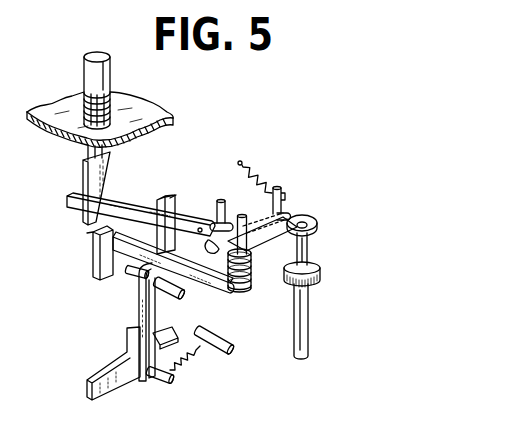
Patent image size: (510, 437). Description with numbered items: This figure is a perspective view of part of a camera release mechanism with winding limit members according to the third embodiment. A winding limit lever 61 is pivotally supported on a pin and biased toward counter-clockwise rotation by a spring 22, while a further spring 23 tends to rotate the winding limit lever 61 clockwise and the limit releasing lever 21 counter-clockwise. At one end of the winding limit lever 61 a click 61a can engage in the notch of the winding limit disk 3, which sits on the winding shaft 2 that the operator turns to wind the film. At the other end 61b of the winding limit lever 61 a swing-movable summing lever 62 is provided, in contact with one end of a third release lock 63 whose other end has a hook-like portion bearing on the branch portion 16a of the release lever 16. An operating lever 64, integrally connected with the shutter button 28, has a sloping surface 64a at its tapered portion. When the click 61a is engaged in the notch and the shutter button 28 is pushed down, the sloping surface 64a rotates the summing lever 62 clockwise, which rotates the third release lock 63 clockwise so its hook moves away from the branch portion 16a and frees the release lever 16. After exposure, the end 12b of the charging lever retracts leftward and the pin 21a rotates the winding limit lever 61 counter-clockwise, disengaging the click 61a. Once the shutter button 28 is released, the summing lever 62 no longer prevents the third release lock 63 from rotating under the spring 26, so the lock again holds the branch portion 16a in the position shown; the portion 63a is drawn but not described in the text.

The winding shaft 2 is at (307, 335).
The winding limit disk 3 is at (317, 220).
The end of charging lever 12b is at (100, 260).
The release lever 16 is at (102, 380).
The branch portion of release lever 16a is at (167, 333).
The limit releasing lever 21 is at (212, 298).
The pin 21a is at (220, 200).
The spring 22 is at (258, 180).
The spring 23 is at (254, 268).
The spring 26 is at (200, 362).
The shutter button 28 is at (90, 80).
The winding limit lever 61 is at (262, 215).
The click 61a is at (288, 214).
The other end of winding limit lever 61b is at (208, 228).
The summing lever 62 is at (133, 217).
The third release lock 63 is at (139, 290).
The tab 63a is at (172, 196).
The operating lever 64 is at (88, 176).
The sloping surface 64a is at (112, 196).